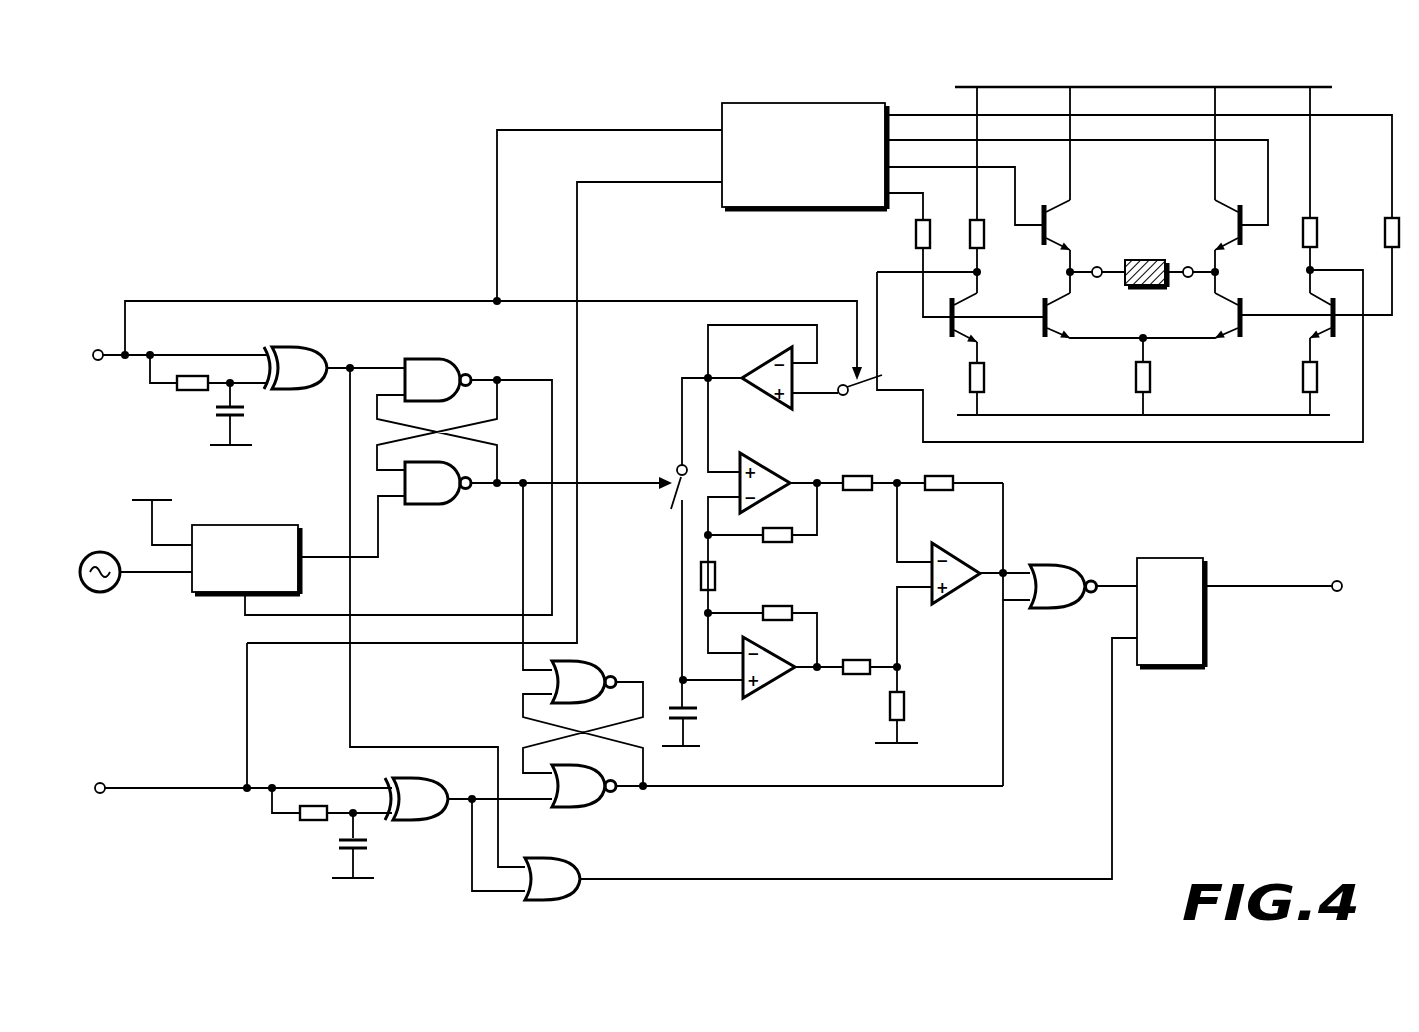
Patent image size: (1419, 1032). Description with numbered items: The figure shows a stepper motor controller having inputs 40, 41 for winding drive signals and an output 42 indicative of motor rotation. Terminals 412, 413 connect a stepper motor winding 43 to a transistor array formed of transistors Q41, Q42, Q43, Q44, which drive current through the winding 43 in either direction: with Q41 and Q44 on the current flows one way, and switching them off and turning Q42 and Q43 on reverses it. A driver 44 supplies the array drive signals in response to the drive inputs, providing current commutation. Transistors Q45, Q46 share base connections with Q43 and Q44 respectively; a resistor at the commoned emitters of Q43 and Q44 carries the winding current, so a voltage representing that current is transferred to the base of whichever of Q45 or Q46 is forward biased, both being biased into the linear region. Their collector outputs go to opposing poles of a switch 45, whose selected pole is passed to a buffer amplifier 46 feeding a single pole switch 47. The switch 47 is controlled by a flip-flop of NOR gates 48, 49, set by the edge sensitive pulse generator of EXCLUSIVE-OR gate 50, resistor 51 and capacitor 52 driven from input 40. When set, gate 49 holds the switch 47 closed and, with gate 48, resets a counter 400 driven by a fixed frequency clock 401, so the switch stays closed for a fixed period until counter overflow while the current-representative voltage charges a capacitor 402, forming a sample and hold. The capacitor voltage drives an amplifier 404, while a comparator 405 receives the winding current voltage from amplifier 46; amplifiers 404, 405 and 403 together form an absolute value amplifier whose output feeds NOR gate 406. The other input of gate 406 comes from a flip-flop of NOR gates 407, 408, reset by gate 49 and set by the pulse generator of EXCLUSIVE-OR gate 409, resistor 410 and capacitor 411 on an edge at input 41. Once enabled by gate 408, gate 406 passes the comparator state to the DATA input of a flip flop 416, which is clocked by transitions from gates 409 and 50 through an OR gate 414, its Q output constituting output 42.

The input 40 is at (98, 360).
The input 41 is at (104, 783).
The output 42 is at (1337, 591).
The stepper motor winding 43 is at (1133, 258).
The driver 44 is at (860, 103).
The switch 45 is at (866, 392).
The buffer amplifier 46 is at (766, 362).
The single pole switch 47 is at (677, 474).
The NOR gate 48 is at (430, 359).
The NOR gate 49 is at (450, 503).
The EXCLUSIVE-OR gate 50 is at (292, 346).
The resistor 51 is at (187, 391).
The capacitor 52 is at (244, 414).
The counter 400 is at (246, 524).
The fixed frequency clock 401 is at (118, 588).
The capacitor 402 is at (697, 723).
The amplifier 403 is at (958, 598).
The amplifier 404 is at (775, 682).
The comparator 405 is at (772, 465).
The NOR gate 406 is at (1072, 610).
The NOR gate 407 is at (587, 662).
The NOR gate 408 is at (600, 805).
The EXCLUSIVE-OR gate 409 is at (422, 781).
The resistor 410 is at (300, 823).
The capacitor 411 is at (368, 852).
The terminal 412 is at (1097, 277).
The terminal 413 is at (1188, 277).
The OR gate 414 is at (580, 890).
The flip flop 416 is at (1163, 558).
The transistor Q41 is at (1058, 222).
The transistor Q42 is at (1222, 224).
The transistor Q43 is at (1042, 337).
The transistor Q44 is at (1240, 335).
The transistor Q45 is at (952, 328).
The transistor Q46 is at (1318, 310).